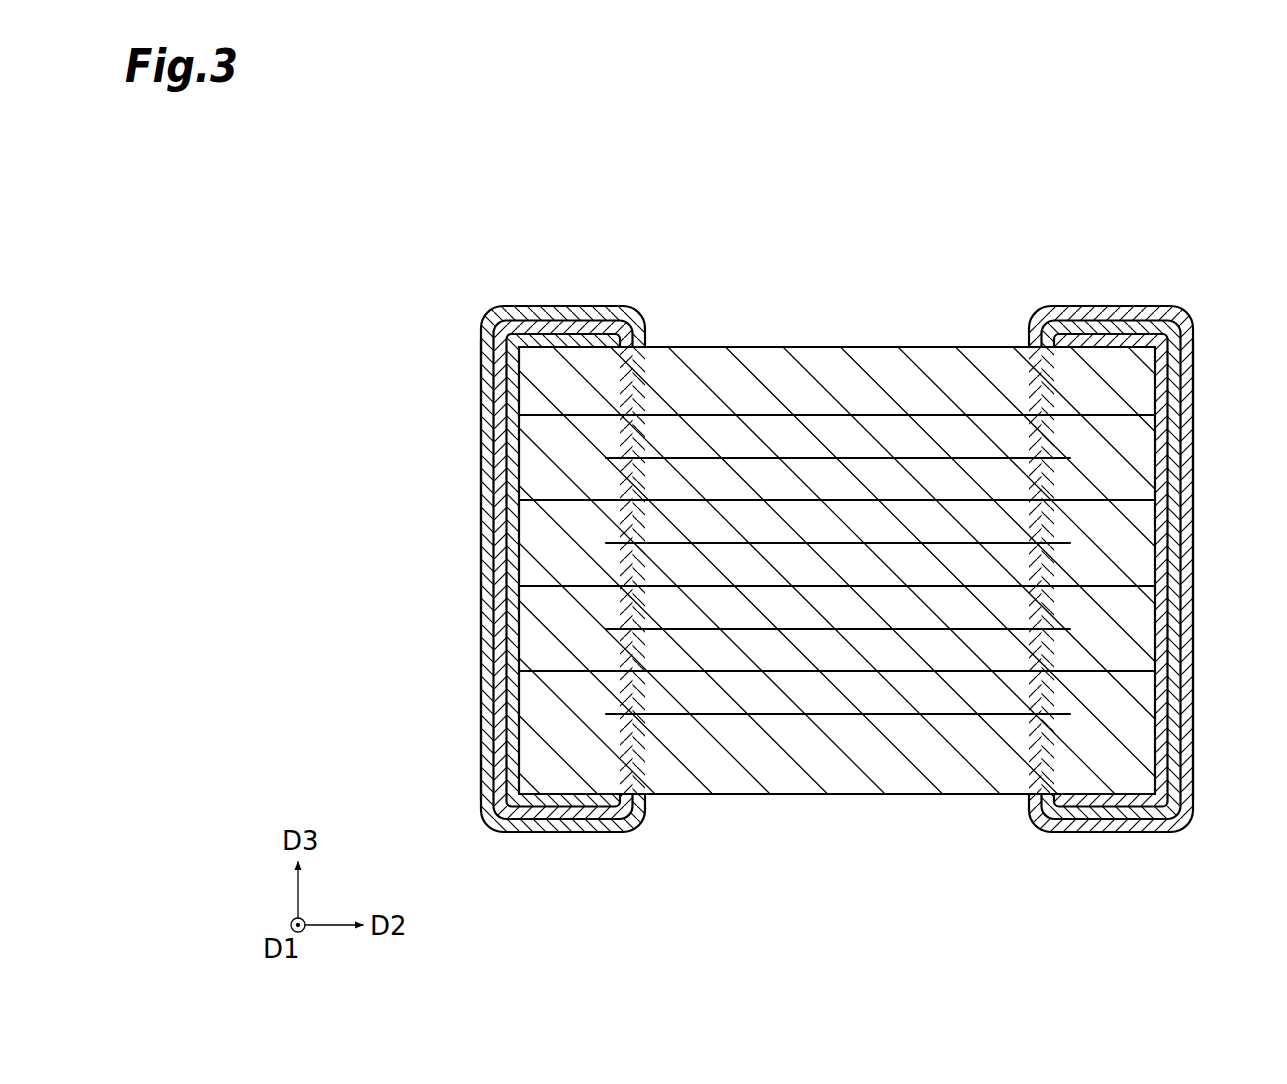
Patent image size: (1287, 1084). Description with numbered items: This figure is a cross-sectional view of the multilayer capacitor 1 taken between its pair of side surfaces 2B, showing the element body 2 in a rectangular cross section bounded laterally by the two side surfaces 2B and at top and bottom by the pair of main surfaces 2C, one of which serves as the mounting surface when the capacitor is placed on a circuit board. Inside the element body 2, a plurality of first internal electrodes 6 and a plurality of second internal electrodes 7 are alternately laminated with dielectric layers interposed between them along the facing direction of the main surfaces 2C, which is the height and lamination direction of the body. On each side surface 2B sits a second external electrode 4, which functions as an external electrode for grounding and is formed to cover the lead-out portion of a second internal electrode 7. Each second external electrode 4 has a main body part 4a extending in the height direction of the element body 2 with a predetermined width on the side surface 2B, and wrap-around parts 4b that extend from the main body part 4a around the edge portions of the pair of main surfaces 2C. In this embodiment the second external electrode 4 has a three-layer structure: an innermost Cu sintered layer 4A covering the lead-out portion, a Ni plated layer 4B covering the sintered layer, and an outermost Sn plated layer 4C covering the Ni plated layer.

The multilayer capacitor 1 is at (474, 200).
The element body 2 is at (690, 568).
The side surface 2B is at (519, 556).
The main surface 2C is at (862, 346).
The second external electrode 4 is at (838, 573).
The Cu sintered layer 4A is at (514, 592).
The Ni plated layer 4B is at (501, 625).
The Sn plated layer 4C is at (487, 652).
The main body part 4a is at (489, 720).
The wrap-around part 4b is at (588, 307).
The first internal electrode 6 is at (728, 714).
The second internal electrode 7 is at (962, 672).